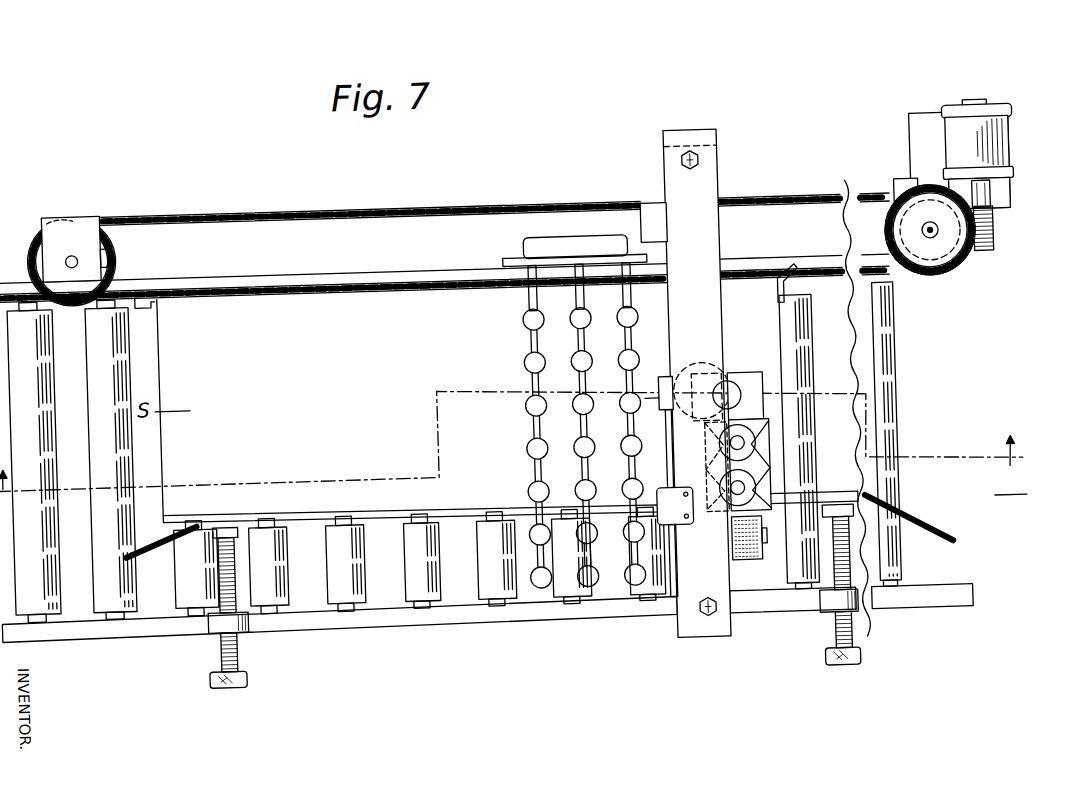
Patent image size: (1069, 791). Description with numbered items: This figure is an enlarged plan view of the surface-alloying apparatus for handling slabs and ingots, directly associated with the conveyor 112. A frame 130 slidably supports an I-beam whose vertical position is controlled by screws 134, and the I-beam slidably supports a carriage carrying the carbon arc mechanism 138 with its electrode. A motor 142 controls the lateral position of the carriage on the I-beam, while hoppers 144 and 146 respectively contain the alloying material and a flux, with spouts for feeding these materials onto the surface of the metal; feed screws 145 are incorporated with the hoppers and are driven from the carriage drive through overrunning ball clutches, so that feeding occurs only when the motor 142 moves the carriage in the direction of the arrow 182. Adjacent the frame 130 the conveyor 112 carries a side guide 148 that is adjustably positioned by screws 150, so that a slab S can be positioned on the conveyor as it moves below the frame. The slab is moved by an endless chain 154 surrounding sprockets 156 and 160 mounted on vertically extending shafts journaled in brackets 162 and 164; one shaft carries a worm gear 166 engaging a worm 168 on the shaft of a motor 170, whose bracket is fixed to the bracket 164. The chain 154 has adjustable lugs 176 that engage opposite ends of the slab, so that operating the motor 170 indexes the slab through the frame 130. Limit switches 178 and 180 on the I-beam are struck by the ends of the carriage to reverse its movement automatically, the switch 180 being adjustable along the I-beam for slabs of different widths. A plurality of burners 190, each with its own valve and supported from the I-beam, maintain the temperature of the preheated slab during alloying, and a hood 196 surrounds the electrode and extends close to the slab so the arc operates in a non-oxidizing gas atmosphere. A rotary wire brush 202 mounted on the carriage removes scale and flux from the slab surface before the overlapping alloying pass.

The conveyor 112 is at (381, 609).
The frame 130 is at (713, 236).
The screws 134 is at (713, 159).
The carbon arc mechanism 138 is at (738, 396).
The motor 142 is at (713, 363).
The hopper 144 is at (761, 440).
The feed screws 145 is at (758, 480).
The hopper 146 is at (759, 492).
The side guide 148 is at (306, 509).
The screws 150 is at (233, 632).
The endless chain 154 is at (346, 203).
The sprocket 156 is at (114, 233).
The sprocket 160 is at (891, 239).
The bracket 162 is at (58, 199).
The bracket 164 is at (910, 193).
The worm gear 166 is at (974, 264).
The worm 168 is at (1000, 238).
The motor 170 is at (976, 136).
The adjustable lugs 176 is at (155, 289).
The limit switch 178 is at (654, 204).
The limit switch 180 is at (695, 509).
The arrow 182 is at (654, 429).
The burners 190 is at (626, 311).
The hood 196 is at (746, 382).
The rotary wire brush 202 is at (752, 557).